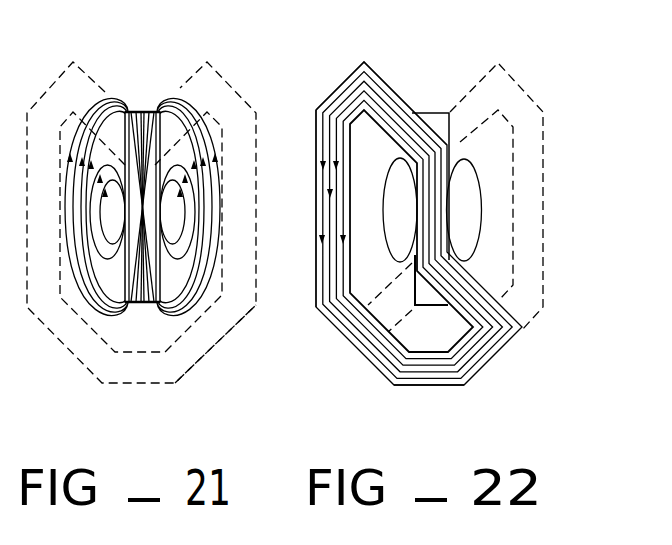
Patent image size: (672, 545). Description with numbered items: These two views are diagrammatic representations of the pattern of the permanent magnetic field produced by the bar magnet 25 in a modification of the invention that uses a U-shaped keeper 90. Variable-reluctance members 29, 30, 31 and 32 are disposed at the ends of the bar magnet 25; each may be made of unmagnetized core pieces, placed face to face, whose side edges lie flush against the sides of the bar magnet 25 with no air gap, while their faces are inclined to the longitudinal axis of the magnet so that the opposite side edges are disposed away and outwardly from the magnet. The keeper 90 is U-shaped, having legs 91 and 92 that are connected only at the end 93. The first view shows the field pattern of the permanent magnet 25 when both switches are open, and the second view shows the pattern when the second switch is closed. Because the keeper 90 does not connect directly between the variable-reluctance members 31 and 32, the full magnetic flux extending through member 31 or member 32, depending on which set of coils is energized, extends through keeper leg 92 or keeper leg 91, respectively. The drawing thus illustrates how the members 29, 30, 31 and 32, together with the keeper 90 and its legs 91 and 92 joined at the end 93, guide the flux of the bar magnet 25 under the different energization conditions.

In FIG. 21, the bar magnet 25 is at (165, 280).
In FIG. 22, the bar magnet 25 is at (451, 211).
In FIG. 21, the variable-reluctance member 29 is at (93, 364).
In FIG. 21, the variable-reluctance member 30 is at (222, 297).
In FIG. 22, the variable-reluctance member 30 is at (464, 318).
In FIG. 21, the variable-reluctance member 31 is at (188, 87).
In FIG. 21, the variable-reluctance member 32 is at (103, 89).
In FIG. 22, the variable-reluctance member 32 is at (394, 93).
In FIG. 21, the keeper 90 is at (226, 345).
In FIG. 22, the keeper 90 is at (358, 360).
In FIG. 22, the keeper leg 91 is at (551, 219).
In FIG. 22, the keeper leg 92 is at (316, 157).
In FIG. 22, the end of keeper 93 is at (431, 389).